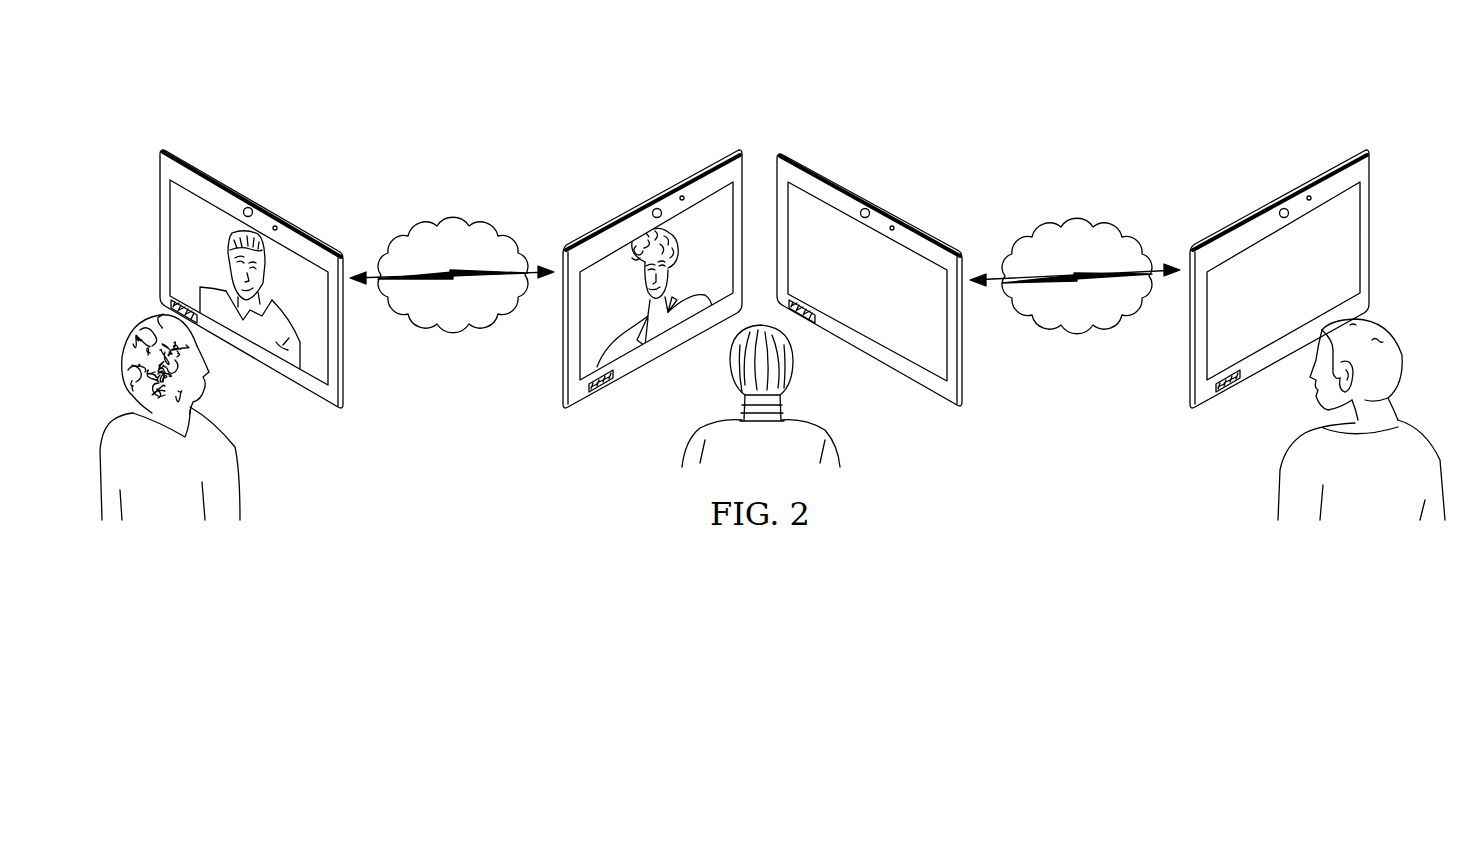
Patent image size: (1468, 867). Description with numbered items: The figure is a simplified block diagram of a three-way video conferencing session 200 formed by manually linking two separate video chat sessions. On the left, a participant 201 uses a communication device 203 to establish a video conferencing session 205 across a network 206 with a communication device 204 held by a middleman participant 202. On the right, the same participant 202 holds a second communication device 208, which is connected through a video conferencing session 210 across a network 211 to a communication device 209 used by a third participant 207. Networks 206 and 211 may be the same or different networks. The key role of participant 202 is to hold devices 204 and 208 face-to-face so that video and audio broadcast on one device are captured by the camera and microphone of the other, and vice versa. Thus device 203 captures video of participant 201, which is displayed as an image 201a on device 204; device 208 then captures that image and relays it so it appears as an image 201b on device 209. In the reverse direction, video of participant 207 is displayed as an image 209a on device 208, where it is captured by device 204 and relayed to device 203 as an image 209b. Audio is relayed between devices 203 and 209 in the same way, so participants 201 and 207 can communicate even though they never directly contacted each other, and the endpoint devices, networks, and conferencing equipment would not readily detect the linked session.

The three-way video conferencing session 200 is at (466, 95).
The participant 201 is at (133, 415).
The image 201a is at (630, 347).
The image 201b is at (1260, 347).
The participant 202 is at (707, 430).
The communication device 203 is at (262, 188).
The communication device 204 is at (645, 188).
The video conferencing session 205 is at (437, 278).
The network 206 is at (448, 222).
The participant 207 is at (1410, 428).
The communication device 208 is at (880, 188).
The communication device 209 is at (1274, 188).
The image 209a is at (888, 360).
The image 209b is at (282, 343).
The video conferencing session 210 is at (1120, 273).
The network 211 is at (1075, 222).